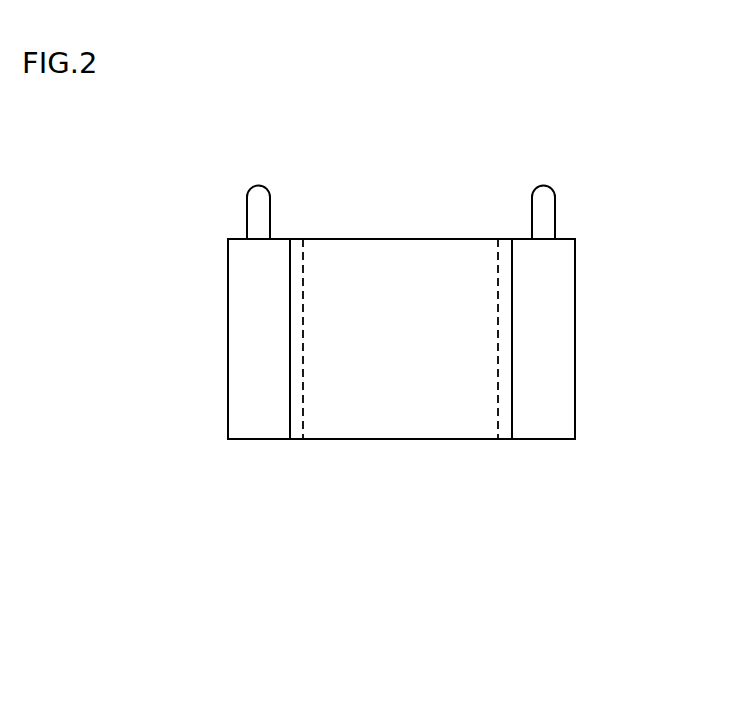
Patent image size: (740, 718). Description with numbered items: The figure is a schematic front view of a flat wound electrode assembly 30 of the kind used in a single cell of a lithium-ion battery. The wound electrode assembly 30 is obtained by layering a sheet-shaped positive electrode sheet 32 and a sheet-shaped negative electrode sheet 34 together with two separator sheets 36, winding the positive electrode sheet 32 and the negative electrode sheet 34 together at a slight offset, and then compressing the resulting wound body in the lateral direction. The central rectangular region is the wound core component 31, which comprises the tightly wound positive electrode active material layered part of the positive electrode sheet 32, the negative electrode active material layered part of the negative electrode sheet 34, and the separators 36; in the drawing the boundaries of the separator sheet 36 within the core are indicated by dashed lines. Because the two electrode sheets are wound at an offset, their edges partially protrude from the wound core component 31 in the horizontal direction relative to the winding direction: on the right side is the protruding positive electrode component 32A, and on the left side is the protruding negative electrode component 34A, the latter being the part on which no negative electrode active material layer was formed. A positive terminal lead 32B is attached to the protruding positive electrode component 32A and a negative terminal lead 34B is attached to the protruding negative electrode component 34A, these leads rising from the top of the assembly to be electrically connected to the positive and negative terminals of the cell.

The wound electrode assembly 30 is at (477, 231).
The wound core component 31 is at (402, 425).
The positive electrode sheet 32 is at (575, 296).
The protruding positive electrode component 32A is at (557, 392).
The positive terminal lead 32B is at (555, 200).
The negative electrode sheet 34 is at (228, 303).
The protruding negative electrode component 34A is at (237, 377).
The negative terminal lead 34B is at (270, 200).
The separator sheet 36 is at (339, 248).